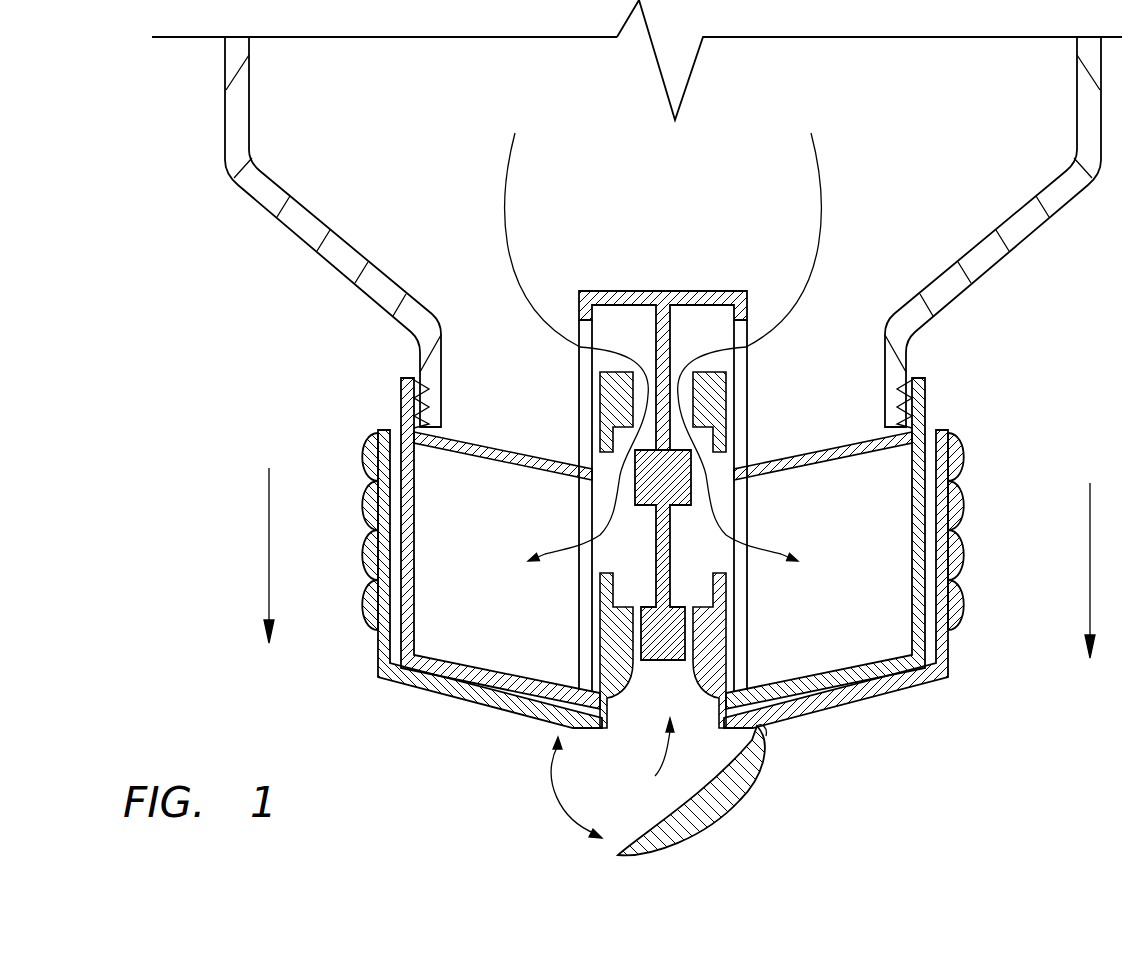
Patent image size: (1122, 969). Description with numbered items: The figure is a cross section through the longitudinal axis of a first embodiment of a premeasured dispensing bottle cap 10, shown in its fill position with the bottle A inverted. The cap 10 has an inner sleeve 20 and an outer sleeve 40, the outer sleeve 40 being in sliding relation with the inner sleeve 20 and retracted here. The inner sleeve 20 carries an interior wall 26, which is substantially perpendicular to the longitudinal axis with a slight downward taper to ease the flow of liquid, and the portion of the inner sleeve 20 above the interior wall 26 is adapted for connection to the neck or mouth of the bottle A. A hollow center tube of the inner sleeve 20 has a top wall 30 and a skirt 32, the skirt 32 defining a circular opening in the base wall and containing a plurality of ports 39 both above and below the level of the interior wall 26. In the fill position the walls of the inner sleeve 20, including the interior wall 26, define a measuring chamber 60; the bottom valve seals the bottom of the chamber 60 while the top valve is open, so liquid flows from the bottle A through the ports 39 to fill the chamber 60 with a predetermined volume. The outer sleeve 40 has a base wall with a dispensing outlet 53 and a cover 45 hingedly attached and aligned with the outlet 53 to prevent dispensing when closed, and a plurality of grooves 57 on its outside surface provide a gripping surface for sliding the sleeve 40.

The bottle A is at (294, 230).
The bottle cap 10 is at (281, 436).
The inner sleeve 20 is at (925, 402).
The interior wall 26 is at (483, 433).
The top wall 30 is at (613, 292).
The skirt 32 is at (583, 400).
The ports 39 is at (748, 367).
The outer sleeve 40 is at (462, 698).
The cover 45 is at (720, 806).
The dispensing outlet 53 is at (655, 776).
The grooves 57 is at (377, 580).
The measuring chamber 60 is at (495, 624).